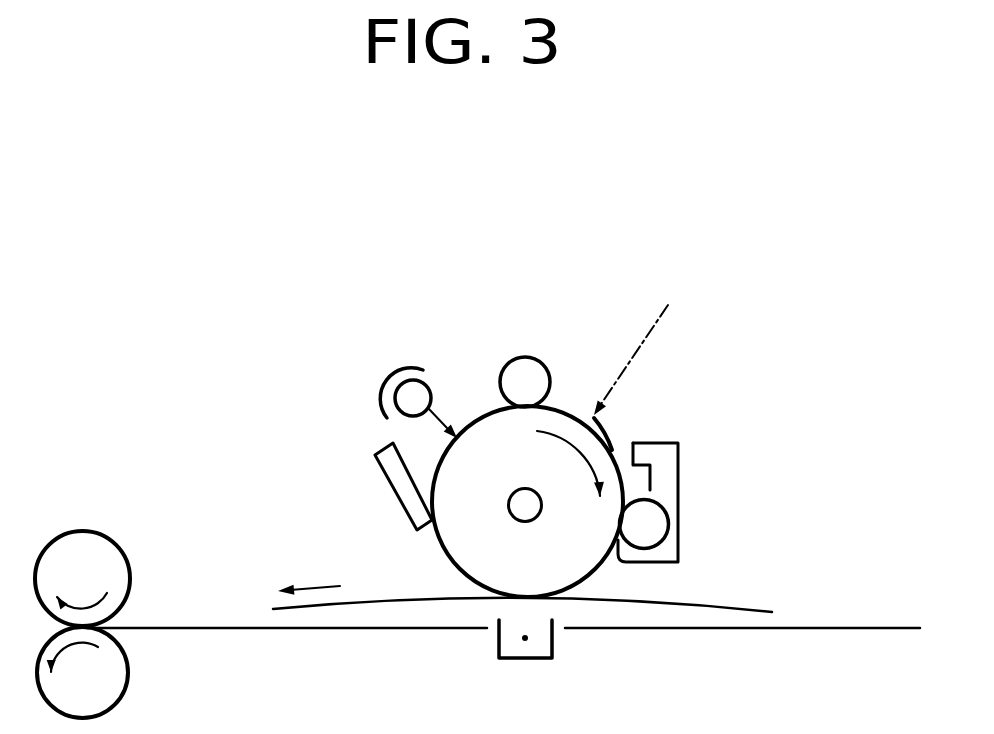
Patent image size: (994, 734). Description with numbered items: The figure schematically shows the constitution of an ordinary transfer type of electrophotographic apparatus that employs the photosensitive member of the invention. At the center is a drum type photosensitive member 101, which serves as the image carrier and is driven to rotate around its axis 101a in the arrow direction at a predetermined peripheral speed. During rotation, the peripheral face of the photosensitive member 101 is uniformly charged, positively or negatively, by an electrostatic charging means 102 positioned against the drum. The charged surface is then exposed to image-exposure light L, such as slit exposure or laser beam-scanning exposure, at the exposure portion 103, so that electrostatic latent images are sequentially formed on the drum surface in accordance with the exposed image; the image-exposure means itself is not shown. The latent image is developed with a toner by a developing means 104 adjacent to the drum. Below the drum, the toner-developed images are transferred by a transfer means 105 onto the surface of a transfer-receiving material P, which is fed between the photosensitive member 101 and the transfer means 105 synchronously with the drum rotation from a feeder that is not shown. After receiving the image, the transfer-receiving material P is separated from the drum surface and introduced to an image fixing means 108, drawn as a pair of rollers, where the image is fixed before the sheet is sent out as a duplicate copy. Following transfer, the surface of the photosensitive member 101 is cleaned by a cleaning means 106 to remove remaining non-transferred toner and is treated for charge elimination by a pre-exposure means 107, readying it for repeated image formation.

The drum type photosensitive member 101 is at (437, 461).
The axis 101a is at (509, 503).
The electrostatic charging means 102 is at (527, 357).
The exposure portion 103 is at (601, 440).
The image-exposure light L is at (662, 327).
The developing means 104 is at (680, 498).
The transfer means 105 is at (553, 643).
The cleaning means 106 is at (407, 513).
The pre-exposure means 107 is at (388, 380).
The image fixing means 108 is at (106, 533).
The transfer-receiving material P is at (722, 603).